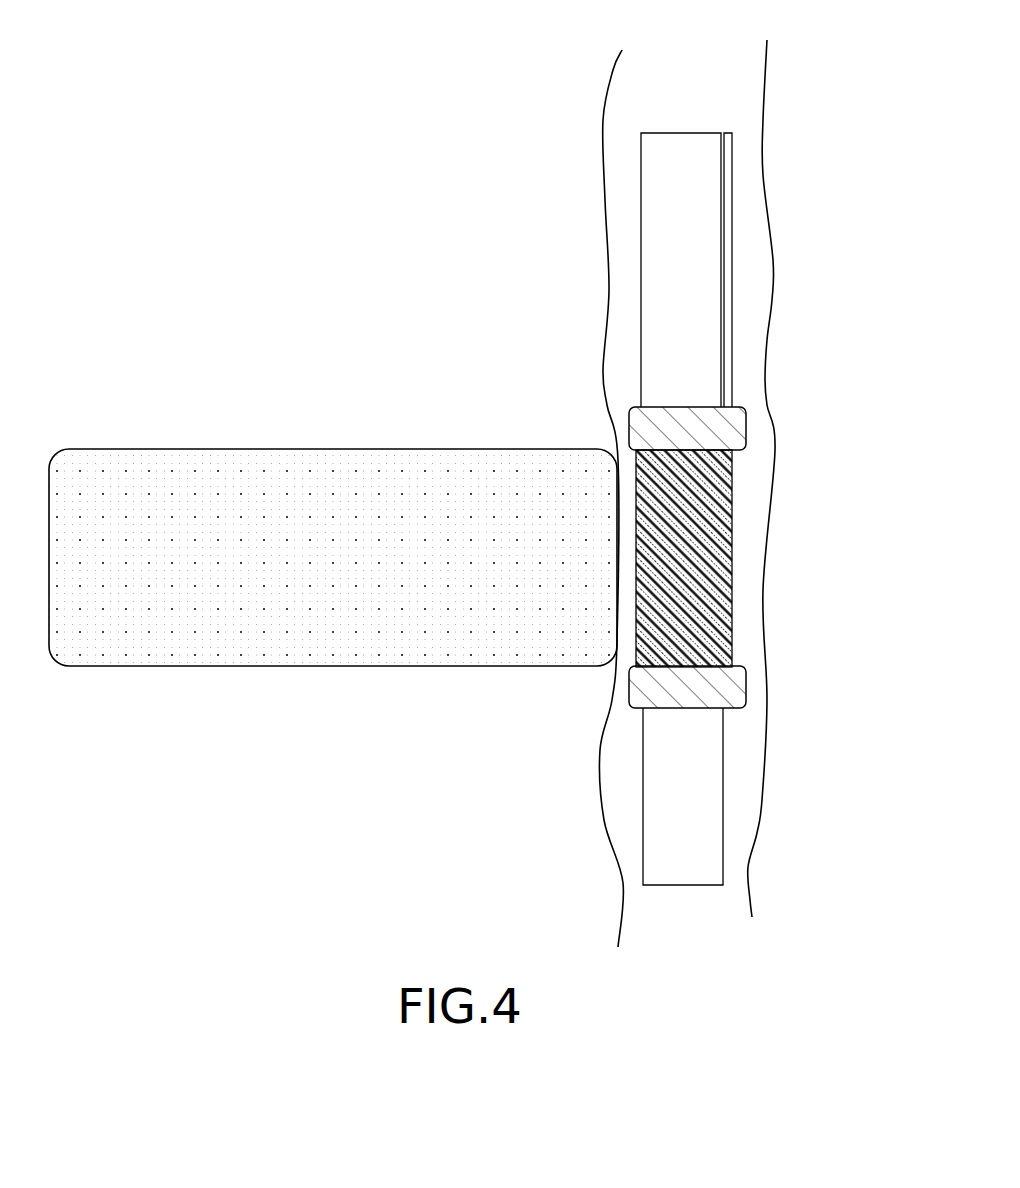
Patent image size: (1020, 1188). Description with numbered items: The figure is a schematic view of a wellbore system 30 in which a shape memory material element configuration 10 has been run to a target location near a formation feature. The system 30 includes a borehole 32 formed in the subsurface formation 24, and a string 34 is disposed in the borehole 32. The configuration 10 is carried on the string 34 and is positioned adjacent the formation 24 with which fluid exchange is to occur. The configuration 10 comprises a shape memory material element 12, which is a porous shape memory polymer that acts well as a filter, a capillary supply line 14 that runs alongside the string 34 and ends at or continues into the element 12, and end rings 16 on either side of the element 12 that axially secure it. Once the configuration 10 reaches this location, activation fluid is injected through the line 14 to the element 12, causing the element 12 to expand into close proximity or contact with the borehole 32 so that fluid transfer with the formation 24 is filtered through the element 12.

The shape memory material element configuration 10 is at (473, 493).
The shape memory material element 12 is at (733, 493).
The capillary supply line 14 is at (730, 155).
The end rings 16 is at (645, 421).
The formation 24 is at (320, 470).
The wellbore system 30 is at (632, 493).
The borehole 32 is at (763, 177).
The string 34 is at (669, 158).